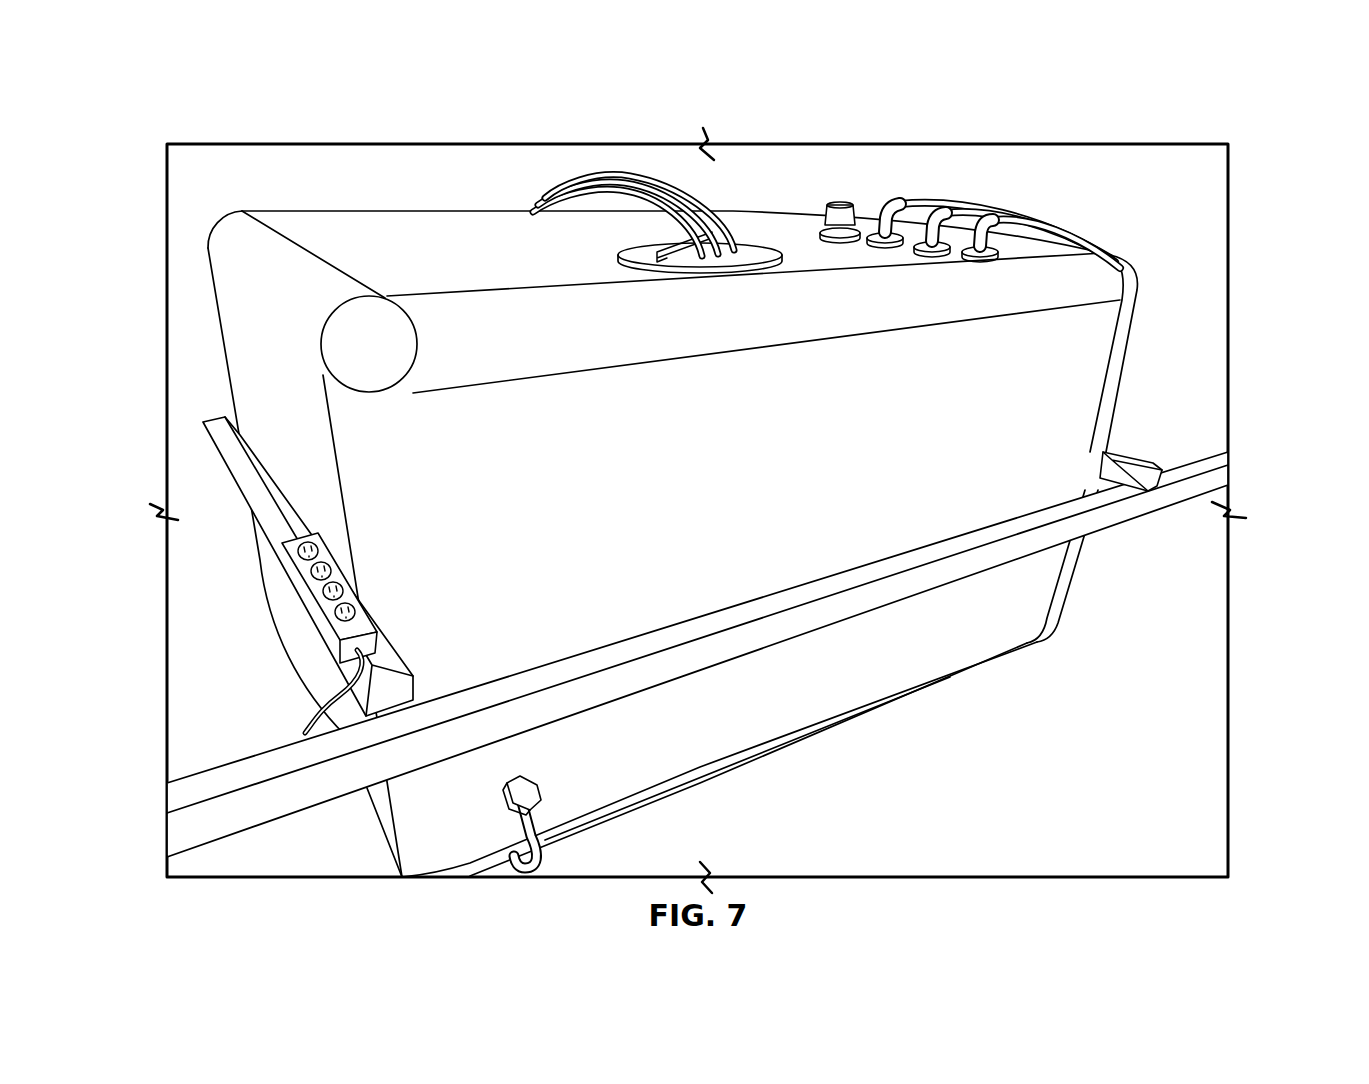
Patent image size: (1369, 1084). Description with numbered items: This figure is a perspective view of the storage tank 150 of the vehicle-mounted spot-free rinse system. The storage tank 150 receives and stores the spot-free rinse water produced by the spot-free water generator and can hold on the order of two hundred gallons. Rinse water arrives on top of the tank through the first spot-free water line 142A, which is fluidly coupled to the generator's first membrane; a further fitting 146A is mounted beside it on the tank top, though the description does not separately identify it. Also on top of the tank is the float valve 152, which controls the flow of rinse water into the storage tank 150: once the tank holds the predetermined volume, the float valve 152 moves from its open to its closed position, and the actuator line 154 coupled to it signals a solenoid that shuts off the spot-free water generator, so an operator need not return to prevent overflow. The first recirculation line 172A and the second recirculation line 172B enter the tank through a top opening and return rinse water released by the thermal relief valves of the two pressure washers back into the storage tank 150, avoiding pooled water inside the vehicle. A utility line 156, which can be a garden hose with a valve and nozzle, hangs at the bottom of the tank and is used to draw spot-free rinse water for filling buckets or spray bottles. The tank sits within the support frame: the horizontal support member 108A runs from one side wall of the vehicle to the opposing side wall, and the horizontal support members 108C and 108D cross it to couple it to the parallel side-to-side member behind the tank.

The storage tank 150 is at (492, 337).
The first recirculation line 172A is at (683, 222).
The second recirculation line 172B is at (727, 225).
The float valve 152 is at (840, 213).
The actuator line 154 is at (882, 215).
The elbow fitting 146A is at (940, 217).
The first spot-free water line 142A is at (990, 222).
The horizontal support member 108A is at (1133, 503).
The horizontal support member 108C is at (268, 510).
The horizontal support member 108D is at (1137, 458).
The utility line 156 is at (512, 868).